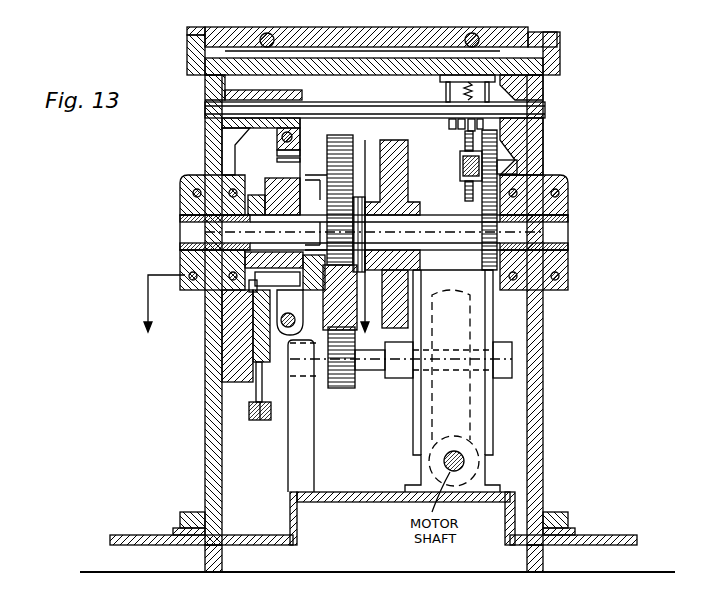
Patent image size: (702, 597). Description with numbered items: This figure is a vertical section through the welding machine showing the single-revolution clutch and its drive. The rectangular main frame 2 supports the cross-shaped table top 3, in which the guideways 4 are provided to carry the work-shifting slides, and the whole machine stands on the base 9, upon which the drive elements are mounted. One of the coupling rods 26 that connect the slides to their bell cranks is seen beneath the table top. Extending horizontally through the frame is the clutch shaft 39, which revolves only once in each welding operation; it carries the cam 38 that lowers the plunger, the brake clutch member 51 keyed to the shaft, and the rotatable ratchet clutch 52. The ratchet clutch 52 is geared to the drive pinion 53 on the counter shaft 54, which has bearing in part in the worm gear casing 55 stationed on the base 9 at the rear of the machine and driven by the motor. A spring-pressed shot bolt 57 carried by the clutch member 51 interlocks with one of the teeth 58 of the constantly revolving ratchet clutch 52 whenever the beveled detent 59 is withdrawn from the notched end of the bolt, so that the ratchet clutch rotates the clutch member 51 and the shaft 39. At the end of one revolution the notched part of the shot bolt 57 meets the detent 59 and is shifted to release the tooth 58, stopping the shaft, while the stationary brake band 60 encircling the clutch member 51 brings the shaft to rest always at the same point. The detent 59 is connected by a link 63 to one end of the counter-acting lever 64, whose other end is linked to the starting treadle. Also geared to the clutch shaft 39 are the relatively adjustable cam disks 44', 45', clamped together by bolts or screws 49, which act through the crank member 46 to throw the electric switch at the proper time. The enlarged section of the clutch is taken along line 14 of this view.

The main frame 2 is at (545, 432).
The table top 3 is at (557, 66).
The guideways 4 is at (510, 28).
The base 9 is at (612, 541).
The section line 14— 14 is at (259, 248).
The coupling rods 26 is at (472, 33).
The cam 38 is at (409, 166).
The clutch shaft 39 is at (374, 232).
The cam disk 44' is at (452, 143).
The cam disk 45' is at (451, 198).
The crank member 46 is at (448, 128).
The bolts or screws 49 is at (462, 188).
The brake clutch member 51 is at (278, 186).
The ratchet clutch 52 is at (330, 172).
The drive pinion 53 is at (341, 388).
The counter shaft 54 is at (370, 372).
The worm gear casing 55 is at (418, 420).
The shot bolt 57 is at (250, 288).
The teeth 58 is at (300, 292).
The beveled detent 59 is at (255, 310).
The brake band 60 is at (280, 164).
The link 63 is at (256, 398).
The counter-acting lever 64 is at (262, 420).